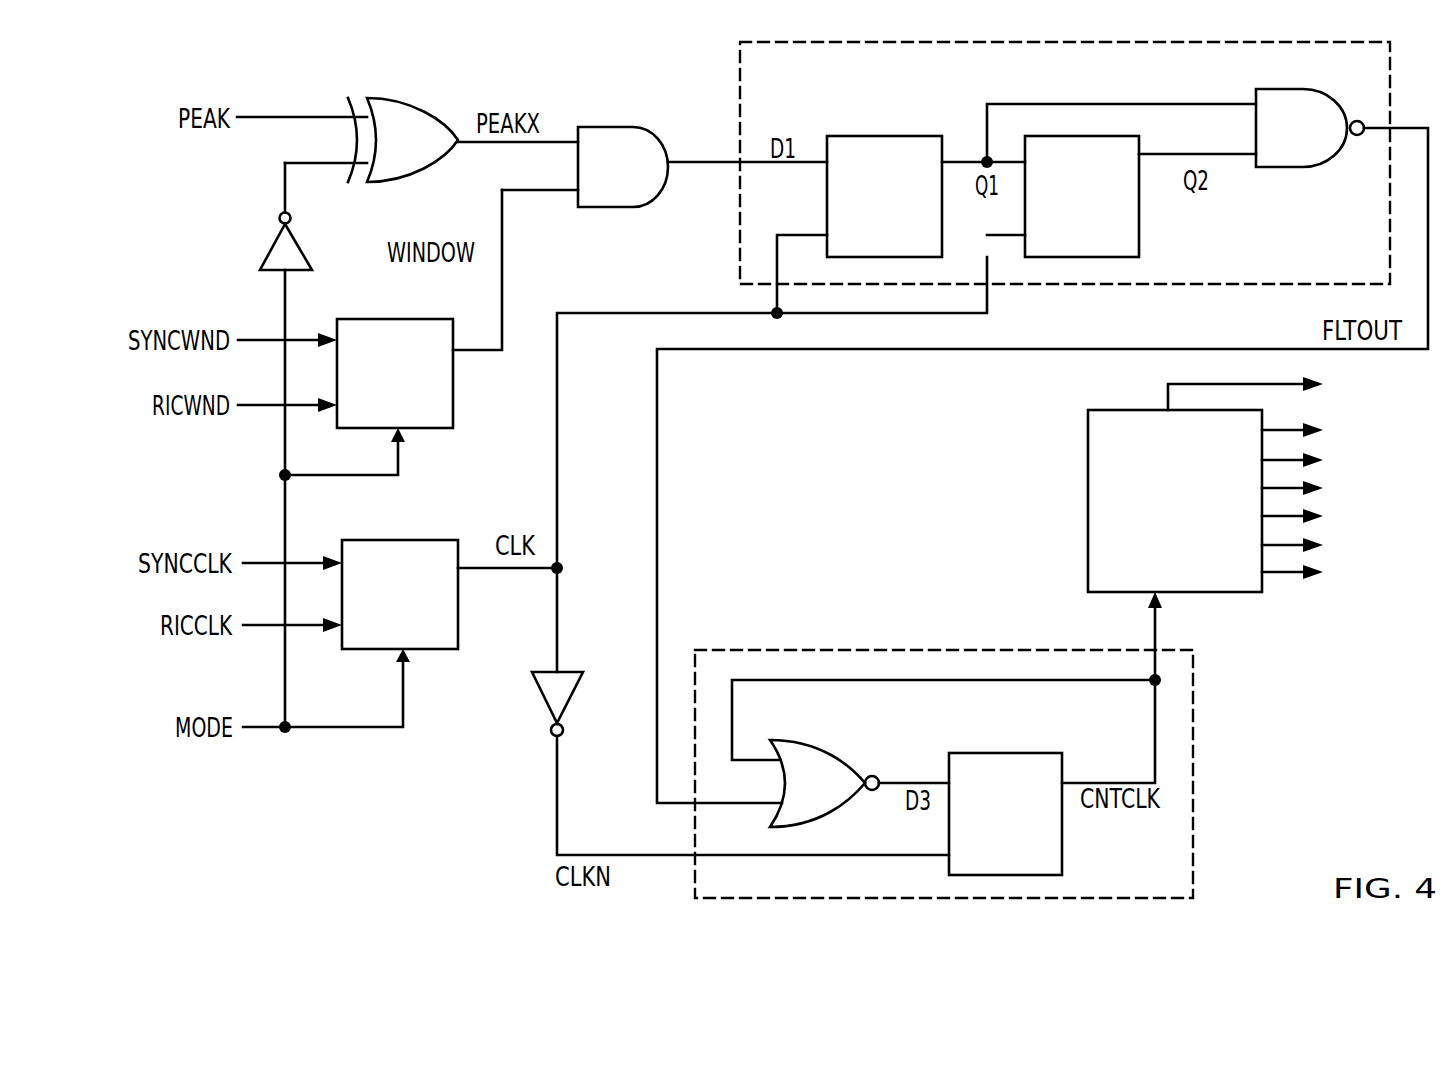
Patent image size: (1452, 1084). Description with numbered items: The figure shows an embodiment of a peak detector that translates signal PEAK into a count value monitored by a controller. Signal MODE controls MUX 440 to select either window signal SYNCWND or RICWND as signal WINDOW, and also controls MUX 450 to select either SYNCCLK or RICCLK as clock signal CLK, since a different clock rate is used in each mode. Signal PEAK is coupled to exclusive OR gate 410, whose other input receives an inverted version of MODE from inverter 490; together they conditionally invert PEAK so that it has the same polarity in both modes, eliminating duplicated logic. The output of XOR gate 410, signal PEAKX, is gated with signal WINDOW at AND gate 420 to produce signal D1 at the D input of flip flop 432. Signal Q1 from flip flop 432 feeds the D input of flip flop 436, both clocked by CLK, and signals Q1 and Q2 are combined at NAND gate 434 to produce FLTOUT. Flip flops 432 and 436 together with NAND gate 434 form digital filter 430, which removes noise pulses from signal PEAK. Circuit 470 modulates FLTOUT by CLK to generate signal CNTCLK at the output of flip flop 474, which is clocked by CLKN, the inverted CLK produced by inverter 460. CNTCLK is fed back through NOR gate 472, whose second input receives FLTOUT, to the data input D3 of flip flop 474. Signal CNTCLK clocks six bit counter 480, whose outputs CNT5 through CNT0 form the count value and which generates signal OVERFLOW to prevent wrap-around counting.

The exclusive OR (XOR) gate 410 is at (388, 100).
The AND gate 420 is at (640, 127).
The digital filter 430 is at (801, 80).
The D-type flip flop (DFF) 432 is at (865, 136).
The NAND gate 434 is at (1316, 172).
The D-type flip flop (DFF) 436 is at (1139, 220).
The MUX 440 is at (400, 319).
The MUX 450 is at (405, 540).
The inverter 460 is at (540, 705).
The circuit 470 is at (1147, 875).
The NOR gate 472 is at (818, 742).
The D-type flip flop (DFF) 474 is at (988, 753).
The 6-bit counter 480 is at (1085, 472).
The inverter 490 is at (268, 240).